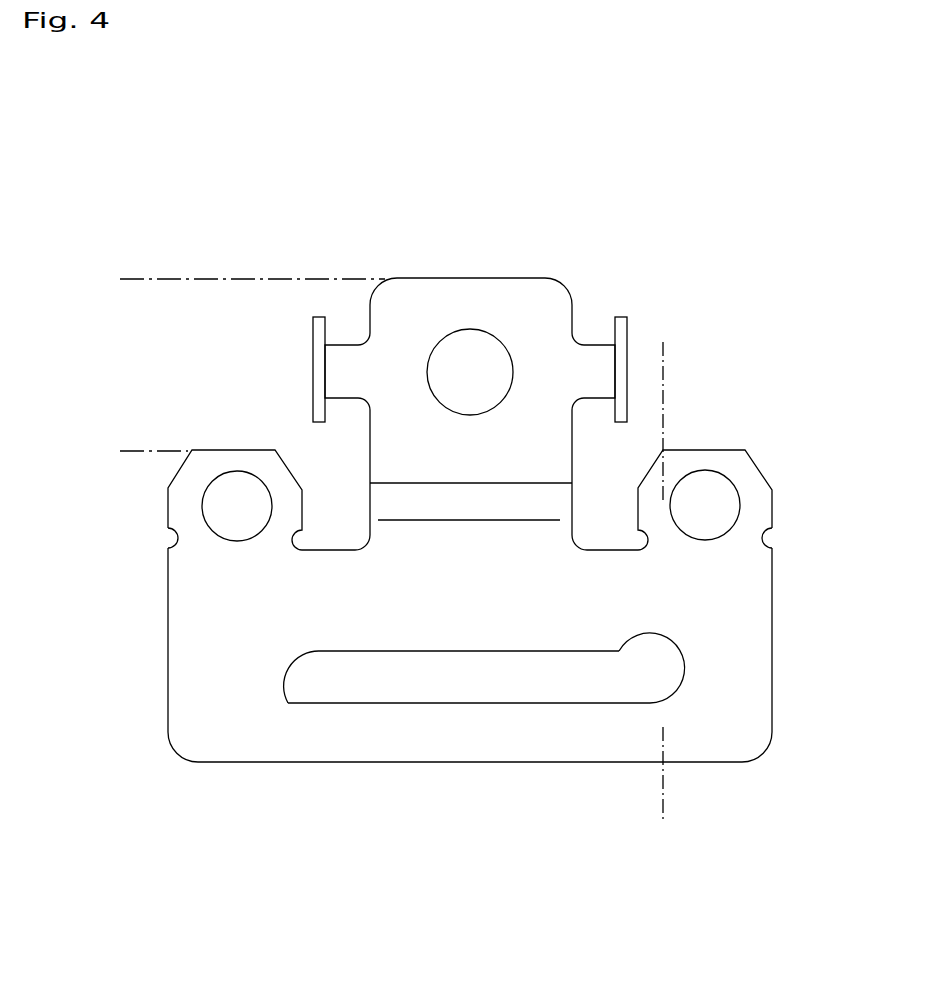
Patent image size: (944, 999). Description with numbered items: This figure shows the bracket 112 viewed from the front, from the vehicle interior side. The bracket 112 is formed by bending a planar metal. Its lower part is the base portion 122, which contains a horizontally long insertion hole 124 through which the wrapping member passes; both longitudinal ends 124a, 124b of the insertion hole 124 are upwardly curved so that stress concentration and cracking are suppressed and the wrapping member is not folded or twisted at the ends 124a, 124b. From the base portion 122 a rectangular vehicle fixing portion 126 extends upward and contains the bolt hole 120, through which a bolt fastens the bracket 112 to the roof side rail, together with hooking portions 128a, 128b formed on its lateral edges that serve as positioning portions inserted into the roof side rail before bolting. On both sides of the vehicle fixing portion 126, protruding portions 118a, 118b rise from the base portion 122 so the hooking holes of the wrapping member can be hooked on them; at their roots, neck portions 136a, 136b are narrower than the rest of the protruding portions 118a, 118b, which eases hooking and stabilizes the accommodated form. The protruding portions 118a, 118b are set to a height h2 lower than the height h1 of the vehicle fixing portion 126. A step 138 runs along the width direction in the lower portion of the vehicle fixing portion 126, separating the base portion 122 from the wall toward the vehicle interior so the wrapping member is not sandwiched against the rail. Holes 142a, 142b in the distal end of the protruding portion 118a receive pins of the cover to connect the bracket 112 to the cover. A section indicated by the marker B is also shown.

The bracket 112 is at (434, 384).
The bolt hole 120 is at (460, 334).
The vehicle fixing portion 126 is at (531, 300).
The hooking portion 128a is at (313, 325).
The hooking portion 128b is at (621, 316).
The protruding portion 118a is at (231, 467).
The protruding portion 118b is at (738, 473).
The hole 142a is at (232, 476).
The hole 142b is at (697, 478).
The neck portion 136a is at (163, 540).
The neck portion 136b is at (778, 538).
The step 138 is at (445, 502).
The base portion 122 is at (469, 573).
The insertion hole 124 is at (457, 668).
The end of insertion hole 124a is at (262, 658).
The end of insertion hole 124b is at (644, 634).
The height of vehicle fixing portion h1 is at (235, 276).
The height of protruding portions h2 is at (135, 449).
The section line B is at (671, 348).